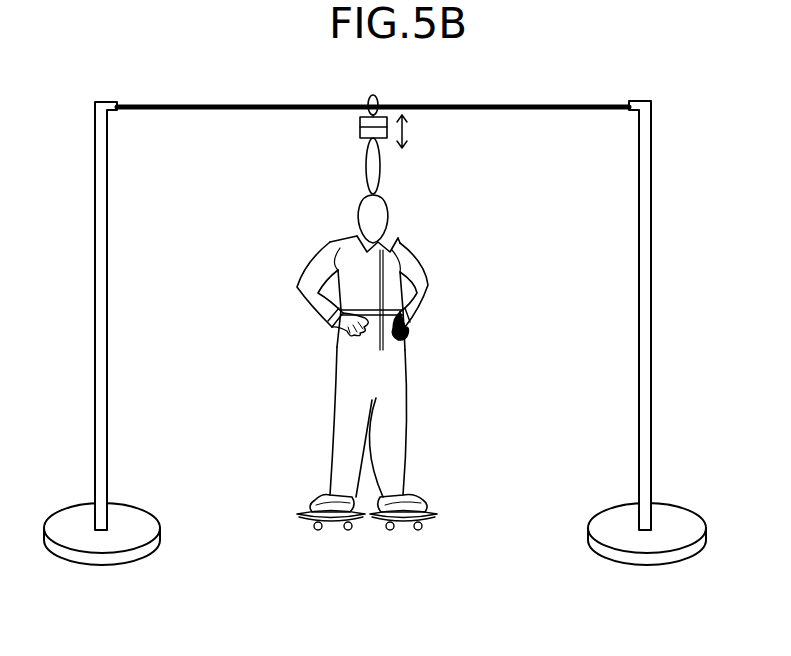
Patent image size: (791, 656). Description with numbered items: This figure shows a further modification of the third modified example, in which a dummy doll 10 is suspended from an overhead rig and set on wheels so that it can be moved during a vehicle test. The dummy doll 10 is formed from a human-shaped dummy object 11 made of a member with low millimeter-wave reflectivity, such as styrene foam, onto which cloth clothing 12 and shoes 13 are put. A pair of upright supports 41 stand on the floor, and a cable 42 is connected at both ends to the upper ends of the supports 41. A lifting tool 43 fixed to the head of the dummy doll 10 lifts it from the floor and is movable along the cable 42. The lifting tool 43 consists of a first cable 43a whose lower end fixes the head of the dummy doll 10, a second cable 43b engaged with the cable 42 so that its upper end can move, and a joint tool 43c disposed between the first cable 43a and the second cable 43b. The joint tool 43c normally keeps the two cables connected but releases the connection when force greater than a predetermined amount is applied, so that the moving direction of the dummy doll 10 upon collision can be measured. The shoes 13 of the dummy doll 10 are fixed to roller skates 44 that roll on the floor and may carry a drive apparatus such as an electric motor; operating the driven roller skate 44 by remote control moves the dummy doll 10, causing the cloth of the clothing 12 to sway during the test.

The dummy doll 10 is at (371, 353).
The dummy object 11 is at (389, 212).
The clothing 12 is at (420, 264).
The shoes 13 is at (322, 494).
The supports 41 is at (108, 384).
The cable 42 is at (520, 105).
The lifting tool 43 is at (351, 134).
The first cable 43a is at (380, 166).
The second cable 43b is at (373, 96).
The joint tool 43c is at (360, 124).
The roller skates 44 is at (312, 518).